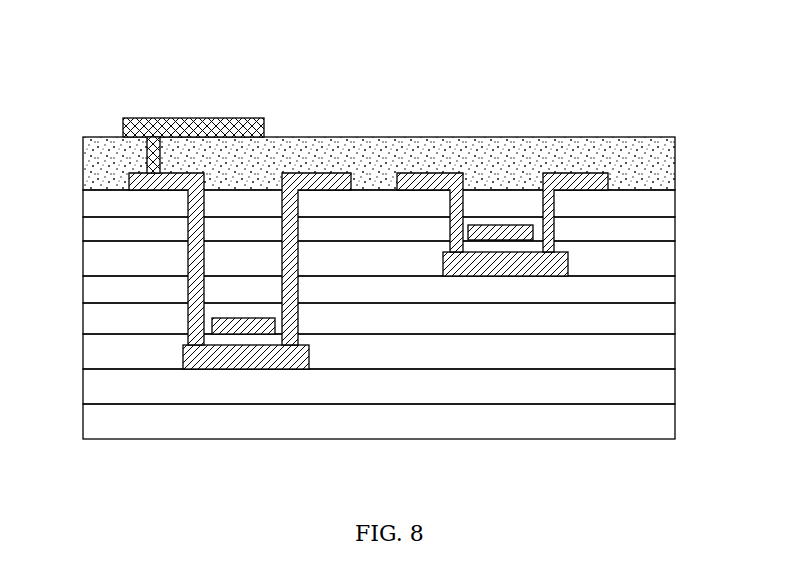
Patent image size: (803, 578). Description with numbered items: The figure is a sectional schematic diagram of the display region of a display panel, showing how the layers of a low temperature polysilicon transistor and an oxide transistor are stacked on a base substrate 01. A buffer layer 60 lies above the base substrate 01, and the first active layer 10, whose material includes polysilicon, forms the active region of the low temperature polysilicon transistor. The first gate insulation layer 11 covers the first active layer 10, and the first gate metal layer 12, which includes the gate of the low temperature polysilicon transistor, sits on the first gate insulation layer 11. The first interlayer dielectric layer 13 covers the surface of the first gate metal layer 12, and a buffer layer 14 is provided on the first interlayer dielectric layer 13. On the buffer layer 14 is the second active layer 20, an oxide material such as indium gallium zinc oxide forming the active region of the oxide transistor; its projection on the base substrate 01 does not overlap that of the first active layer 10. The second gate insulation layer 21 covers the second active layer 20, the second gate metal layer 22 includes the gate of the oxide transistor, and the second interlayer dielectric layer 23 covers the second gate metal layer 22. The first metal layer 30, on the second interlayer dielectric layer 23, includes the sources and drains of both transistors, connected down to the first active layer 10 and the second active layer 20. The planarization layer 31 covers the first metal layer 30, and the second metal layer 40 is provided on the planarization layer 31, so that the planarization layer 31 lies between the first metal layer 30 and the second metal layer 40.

The base substrate 01 is at (645, 427).
The buffer layer 60 is at (645, 392).
The first gate insulation layer 11 is at (645, 355).
The first interlayer dielectric layer 13 is at (645, 324).
The buffer layer 14 is at (645, 293).
The second gate insulation layer 21 is at (645, 262).
The second gate metal layer 22 is at (645, 232).
The second interlayer dielectric layer 23 is at (645, 206).
The planarization layer 31 is at (648, 164).
The first metal layer 30 is at (435, 173).
The second metal layer 40 is at (123, 120).
The first active layer 10 is at (225, 369).
The first gate metal layer 12 is at (263, 334).
The second active layer 20 is at (478, 276).